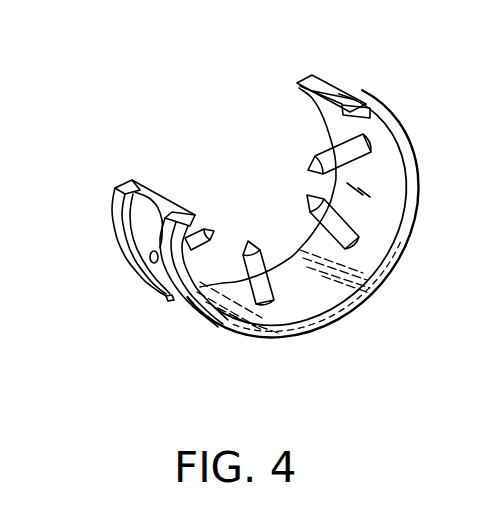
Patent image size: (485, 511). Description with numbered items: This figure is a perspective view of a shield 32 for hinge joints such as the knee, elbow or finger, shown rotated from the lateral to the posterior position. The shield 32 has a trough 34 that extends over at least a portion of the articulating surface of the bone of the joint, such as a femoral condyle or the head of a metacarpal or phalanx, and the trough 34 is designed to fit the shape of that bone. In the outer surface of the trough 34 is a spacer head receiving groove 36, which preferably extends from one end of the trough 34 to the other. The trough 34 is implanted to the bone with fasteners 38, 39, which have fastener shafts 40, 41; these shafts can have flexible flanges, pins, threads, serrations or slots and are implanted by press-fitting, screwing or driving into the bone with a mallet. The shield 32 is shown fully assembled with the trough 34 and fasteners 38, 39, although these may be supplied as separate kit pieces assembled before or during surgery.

The shield 32 is at (108, 308).
The trough 34 is at (118, 207).
The spacer head receiving groove 36 is at (157, 216).
The fastener 38 is at (324, 163).
The fastener 39 is at (314, 217).
The fastener shaft 40 is at (312, 165).
The fastener shaft 41 is at (306, 197).